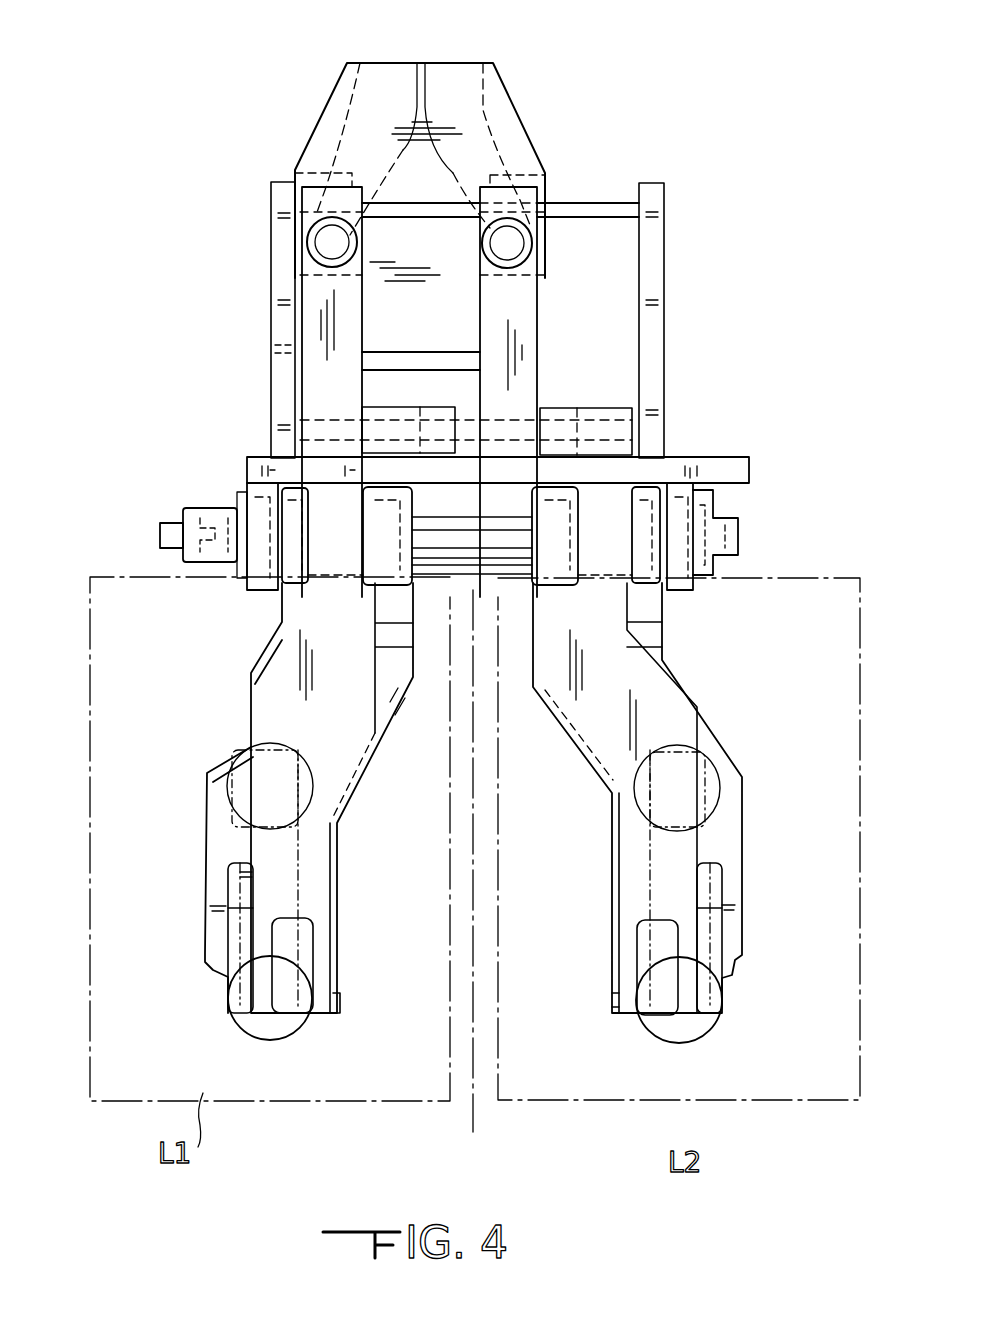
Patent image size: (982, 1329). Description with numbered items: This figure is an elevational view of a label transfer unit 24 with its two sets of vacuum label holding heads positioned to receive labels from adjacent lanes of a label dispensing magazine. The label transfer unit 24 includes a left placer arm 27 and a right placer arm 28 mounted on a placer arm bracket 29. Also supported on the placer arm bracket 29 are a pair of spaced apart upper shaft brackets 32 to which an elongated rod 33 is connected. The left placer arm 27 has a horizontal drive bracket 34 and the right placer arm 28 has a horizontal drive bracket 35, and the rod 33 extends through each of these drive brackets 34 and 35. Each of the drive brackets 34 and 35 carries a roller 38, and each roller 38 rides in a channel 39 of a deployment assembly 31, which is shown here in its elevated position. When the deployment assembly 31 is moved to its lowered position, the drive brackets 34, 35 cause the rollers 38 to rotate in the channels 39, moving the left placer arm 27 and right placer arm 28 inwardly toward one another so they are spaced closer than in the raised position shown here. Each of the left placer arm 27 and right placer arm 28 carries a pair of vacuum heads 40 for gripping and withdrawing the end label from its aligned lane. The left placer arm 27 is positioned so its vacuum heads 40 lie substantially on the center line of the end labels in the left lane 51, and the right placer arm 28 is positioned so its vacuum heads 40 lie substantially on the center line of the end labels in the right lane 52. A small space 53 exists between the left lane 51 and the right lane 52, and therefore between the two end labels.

The label transfer unit 24 is at (753, 504).
The left placer arm 27 is at (218, 808).
The right placer arm 28 is at (722, 812).
The placer arm bracket 29 is at (715, 465).
The deployment assembly 31 is at (505, 80).
The upper shaft brackets 32 is at (655, 245).
The elongated rod 33 is at (585, 212).
The horizontal drive bracket 34 is at (320, 310).
The horizontal drive bracket 35 is at (520, 320).
The roller 38 is at (310, 243).
The channel 39 is at (340, 132).
The vacuum heads 40 is at (232, 742).
The left lane 51 is at (82, 598).
The right lane 52 is at (862, 1096).
The small space 53 is at (486, 1099).